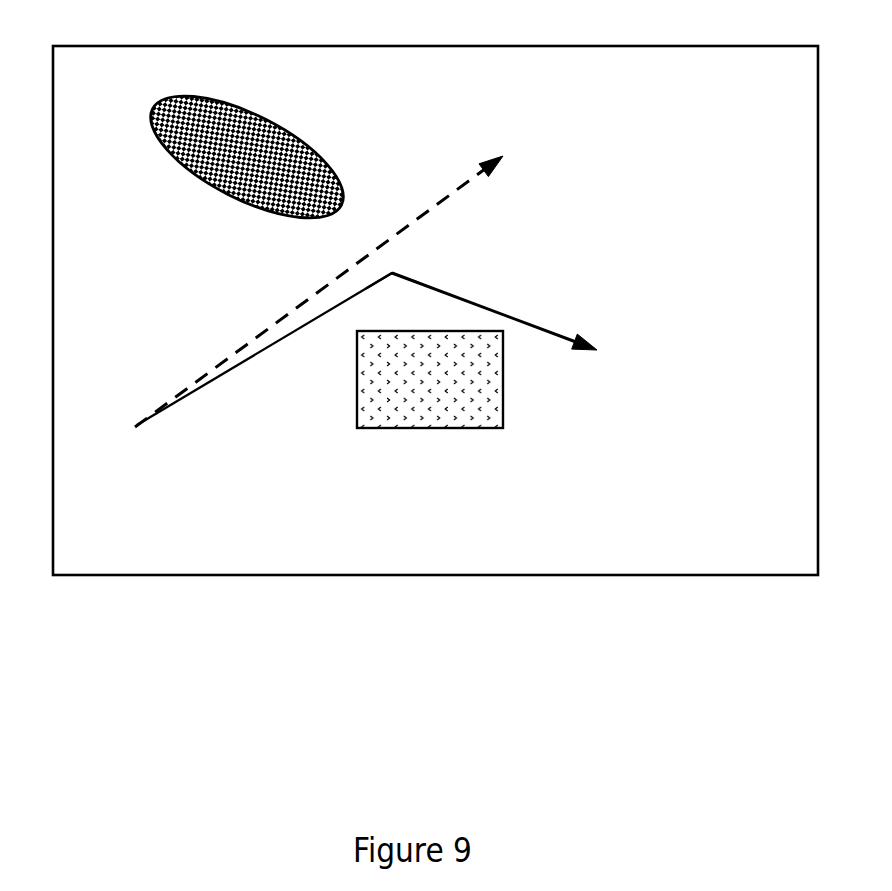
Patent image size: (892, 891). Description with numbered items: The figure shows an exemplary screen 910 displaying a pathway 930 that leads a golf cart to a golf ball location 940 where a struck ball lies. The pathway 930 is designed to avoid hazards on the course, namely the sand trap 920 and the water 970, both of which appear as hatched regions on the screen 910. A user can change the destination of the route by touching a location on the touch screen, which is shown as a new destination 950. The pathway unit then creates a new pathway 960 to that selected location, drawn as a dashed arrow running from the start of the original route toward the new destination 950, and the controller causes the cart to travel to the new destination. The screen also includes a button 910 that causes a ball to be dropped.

The exemplary screen 910 is at (435, 288).
The sand trap 920 is at (430, 379).
The pathway 930 is at (421, 270).
The golf ball location 940 is at (524, 328).
The new destination 950 is at (349, 282).
The new pathway 960 is at (264, 349).
The water 970 is at (246, 156).